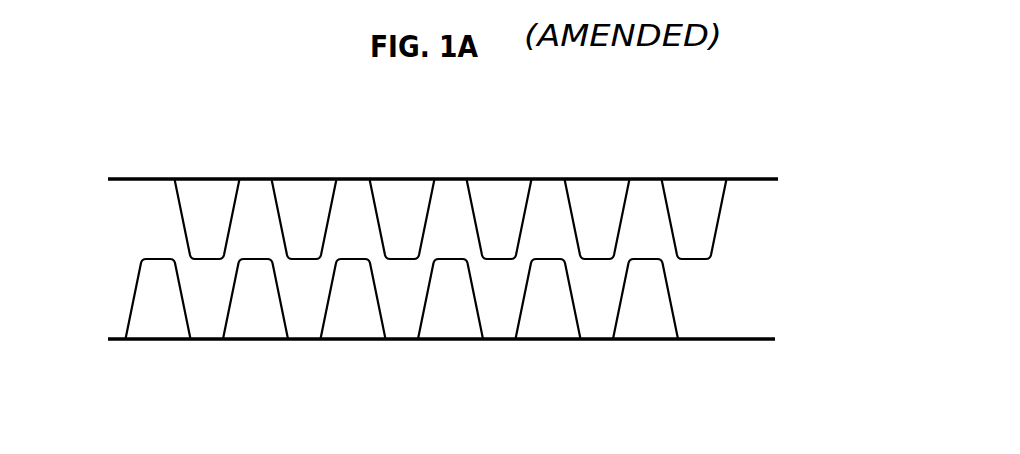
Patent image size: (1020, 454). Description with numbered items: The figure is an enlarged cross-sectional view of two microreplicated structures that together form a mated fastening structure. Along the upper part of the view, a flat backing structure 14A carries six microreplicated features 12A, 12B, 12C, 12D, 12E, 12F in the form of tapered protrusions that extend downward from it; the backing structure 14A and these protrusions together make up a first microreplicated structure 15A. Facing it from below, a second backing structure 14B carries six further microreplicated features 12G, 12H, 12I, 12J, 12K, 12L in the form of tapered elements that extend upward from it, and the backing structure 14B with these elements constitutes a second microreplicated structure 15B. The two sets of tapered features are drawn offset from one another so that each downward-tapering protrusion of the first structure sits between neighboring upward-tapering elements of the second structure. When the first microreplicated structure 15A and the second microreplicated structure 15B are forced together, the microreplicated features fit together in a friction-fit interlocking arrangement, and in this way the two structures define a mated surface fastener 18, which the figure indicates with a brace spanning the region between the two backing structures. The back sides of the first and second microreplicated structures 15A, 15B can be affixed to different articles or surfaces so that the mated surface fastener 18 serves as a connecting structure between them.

The microreplicated feature 12A is at (208, 197).
The microreplicated feature 12B is at (305, 197).
The microreplicated feature 12C is at (403, 197).
The microreplicated feature 12D is at (501, 199).
The microreplicated feature 12E is at (599, 199).
The microreplicated feature 12F is at (697, 199).
The microreplicated feature 12G is at (158, 307).
The microreplicated feature 12H is at (256, 307).
The microreplicated feature 12I is at (352, 307).
The microreplicated feature 12J is at (450, 307).
The microreplicated feature 12K is at (548, 307).
The microreplicated feature 12L is at (645, 307).
The backing structure 14A is at (778, 179).
The backing structure 14B is at (775, 339).
The first microreplicated structure 15A is at (126, 180).
The second microreplicated structure 15B is at (118, 339).
The mated surface fastener 18 is at (108, 162).